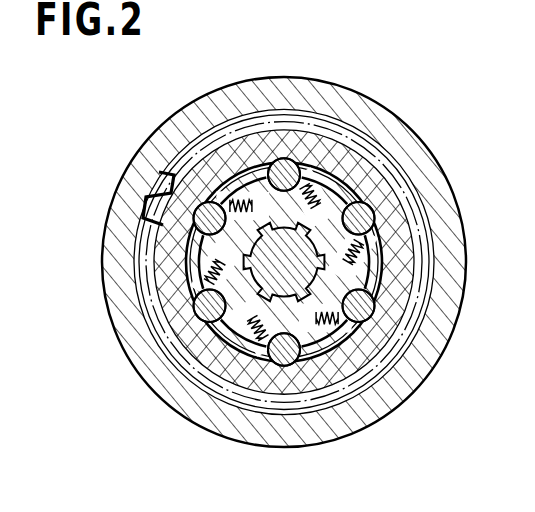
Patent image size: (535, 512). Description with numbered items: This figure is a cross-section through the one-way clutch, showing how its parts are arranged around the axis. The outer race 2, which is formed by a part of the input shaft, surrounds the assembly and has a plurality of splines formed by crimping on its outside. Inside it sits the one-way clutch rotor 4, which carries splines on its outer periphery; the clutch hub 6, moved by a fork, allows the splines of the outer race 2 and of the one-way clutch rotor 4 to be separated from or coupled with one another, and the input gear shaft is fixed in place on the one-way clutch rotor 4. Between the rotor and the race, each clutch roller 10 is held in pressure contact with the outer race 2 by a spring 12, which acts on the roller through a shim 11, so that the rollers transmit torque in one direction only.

The outer race 2 is at (246, 140).
The one-way clutch rotor 4 is at (231, 160).
The clutch hub 6 is at (443, 203).
The clutch roller 10 is at (290, 162).
The shim 11 is at (311, 185).
The spring 12 is at (328, 190).